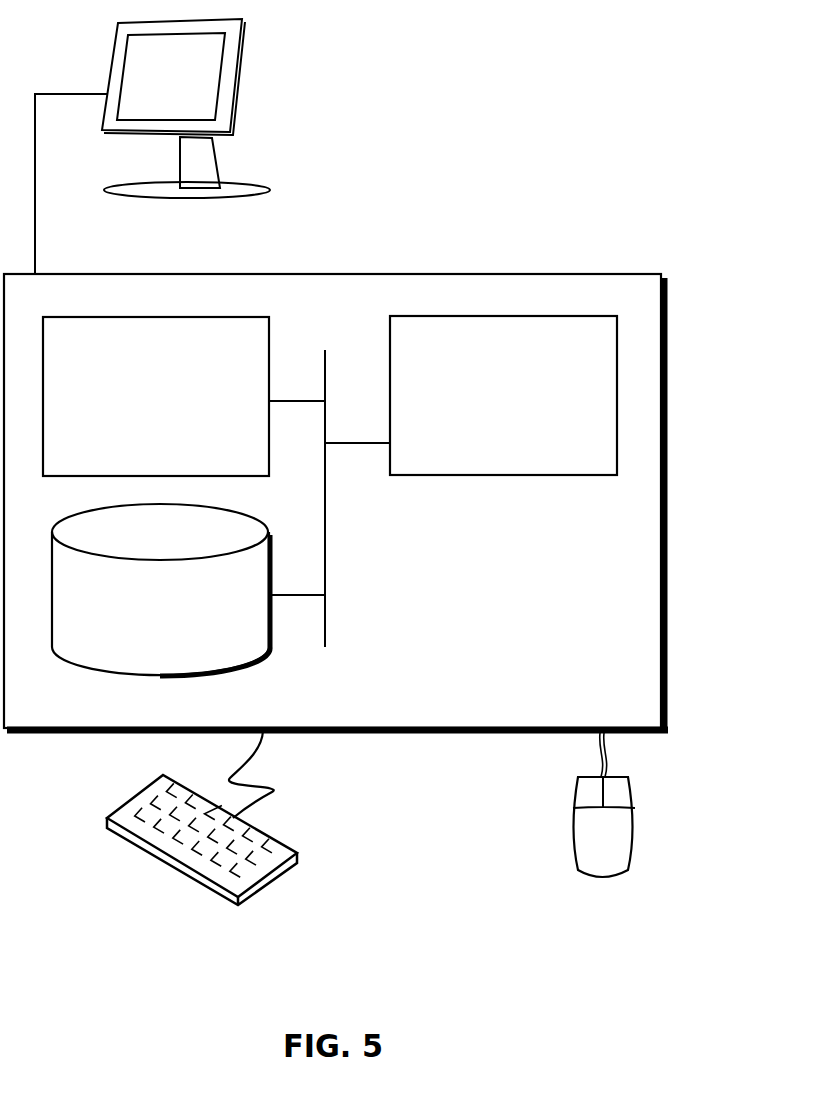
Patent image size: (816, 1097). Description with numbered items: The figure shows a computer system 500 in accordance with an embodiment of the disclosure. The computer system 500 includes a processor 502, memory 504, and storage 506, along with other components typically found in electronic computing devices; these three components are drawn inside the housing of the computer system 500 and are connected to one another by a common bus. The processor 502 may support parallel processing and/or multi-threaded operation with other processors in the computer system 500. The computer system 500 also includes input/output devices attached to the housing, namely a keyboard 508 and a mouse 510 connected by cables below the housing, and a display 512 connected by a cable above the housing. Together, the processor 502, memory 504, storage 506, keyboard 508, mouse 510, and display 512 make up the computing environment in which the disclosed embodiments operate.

The computer system 500 is at (380, 253).
The processor 502 is at (487, 410).
The memory 504 is at (137, 408).
The storage 506 is at (143, 618).
The keyboard 508 is at (125, 837).
The mouse 510 is at (583, 850).
The display 512 is at (152, 146).